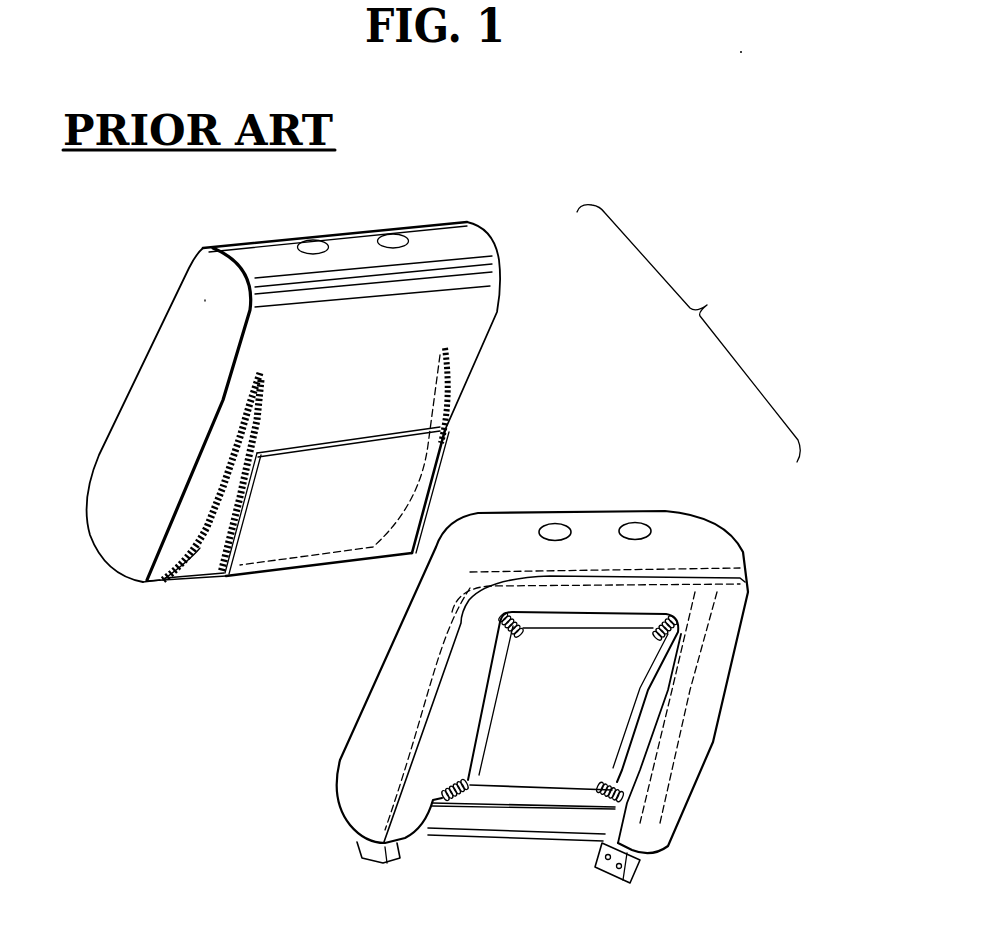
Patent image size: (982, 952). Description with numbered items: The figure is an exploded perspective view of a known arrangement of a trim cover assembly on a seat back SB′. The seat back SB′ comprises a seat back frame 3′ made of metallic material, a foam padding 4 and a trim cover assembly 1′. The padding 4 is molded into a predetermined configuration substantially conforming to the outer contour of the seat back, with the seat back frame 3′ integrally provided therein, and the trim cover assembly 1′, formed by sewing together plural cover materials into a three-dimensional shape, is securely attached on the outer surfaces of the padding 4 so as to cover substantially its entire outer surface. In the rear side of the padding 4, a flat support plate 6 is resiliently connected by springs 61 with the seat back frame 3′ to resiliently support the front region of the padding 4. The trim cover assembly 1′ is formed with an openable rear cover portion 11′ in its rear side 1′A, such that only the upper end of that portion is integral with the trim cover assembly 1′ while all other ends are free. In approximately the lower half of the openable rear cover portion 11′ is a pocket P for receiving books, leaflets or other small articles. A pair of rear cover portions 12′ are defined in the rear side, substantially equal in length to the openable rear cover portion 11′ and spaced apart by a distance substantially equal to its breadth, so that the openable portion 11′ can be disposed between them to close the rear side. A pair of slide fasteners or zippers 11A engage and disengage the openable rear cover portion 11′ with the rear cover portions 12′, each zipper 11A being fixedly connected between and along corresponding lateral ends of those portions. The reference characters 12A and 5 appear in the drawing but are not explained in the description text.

The trim cover assembly 1′ is at (481, 226).
The rear side of trim cover assembly 1′A is at (383, 351).
The openable rear cover portion 11′ is at (378, 411).
The slide fastener (zipper) 11A is at (261, 422).
The rear cover portion 12′ is at (222, 440).
The lower end of side cover 12A is at (147, 583).
The slide fastener 5 is at (210, 552).
The pocket P is at (287, 540).
The seat back SB′ is at (688, 333).
The foam padding 4 is at (717, 528).
The seat back frame 3′ is at (700, 650).
The flat support plate 6 is at (537, 757).
The spring 61 is at (525, 622).